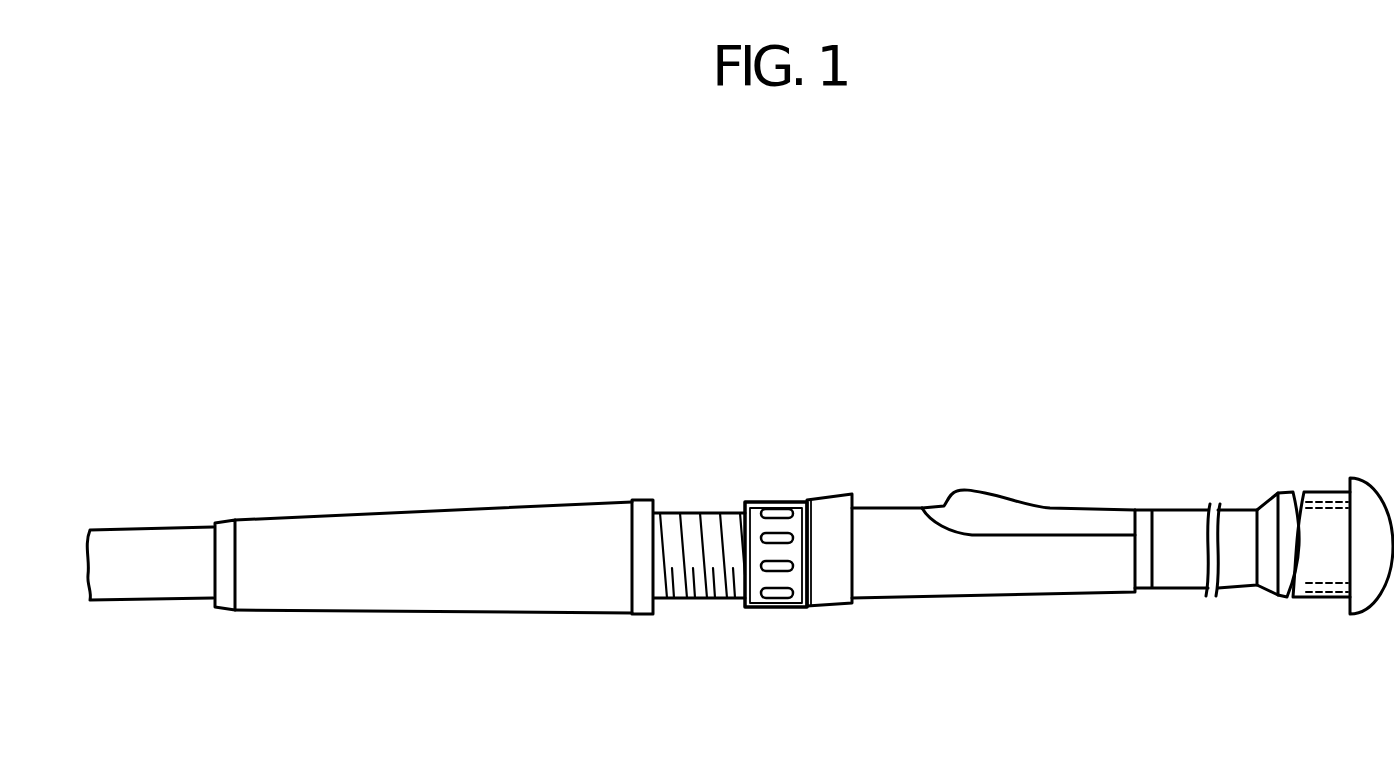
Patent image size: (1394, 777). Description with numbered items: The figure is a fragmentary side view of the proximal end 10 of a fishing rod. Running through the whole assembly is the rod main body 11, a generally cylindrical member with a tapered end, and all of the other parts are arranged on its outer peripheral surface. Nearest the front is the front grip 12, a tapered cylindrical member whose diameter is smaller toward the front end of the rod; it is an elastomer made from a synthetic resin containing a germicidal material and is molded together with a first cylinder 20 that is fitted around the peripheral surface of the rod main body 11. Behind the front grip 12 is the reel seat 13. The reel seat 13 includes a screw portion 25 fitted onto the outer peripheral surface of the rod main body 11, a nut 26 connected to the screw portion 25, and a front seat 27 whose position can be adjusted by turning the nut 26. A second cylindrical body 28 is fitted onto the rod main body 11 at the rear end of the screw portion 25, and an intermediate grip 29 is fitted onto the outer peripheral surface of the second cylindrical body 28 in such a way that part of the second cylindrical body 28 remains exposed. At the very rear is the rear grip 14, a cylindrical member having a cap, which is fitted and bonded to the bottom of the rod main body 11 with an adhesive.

The proximal end 10 is at (653, 373).
The rod main body 11 is at (150, 537).
The front grip 12 is at (455, 510).
The reel seat 13 is at (925, 483).
The rear grip 14 is at (1322, 493).
The first cylinder 20 is at (222, 530).
The screw portion 25 is at (692, 515).
The nut 26 is at (768, 507).
The front seat 27 is at (830, 510).
The second cylindrical body 28 is at (1007, 513).
The intermediate grip 29 is at (983, 575).